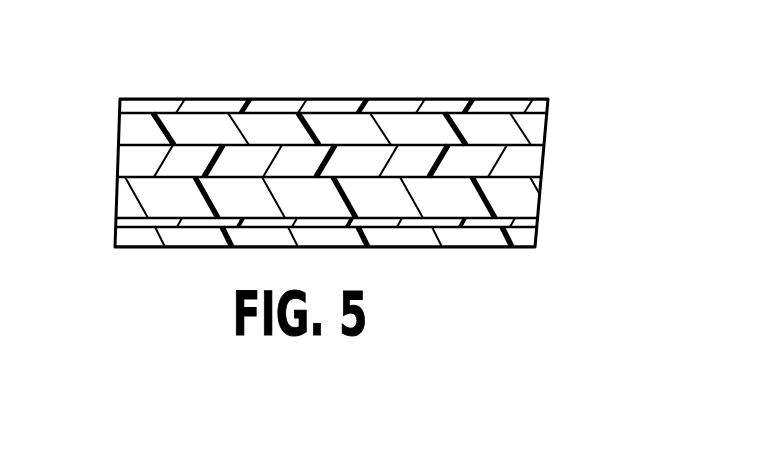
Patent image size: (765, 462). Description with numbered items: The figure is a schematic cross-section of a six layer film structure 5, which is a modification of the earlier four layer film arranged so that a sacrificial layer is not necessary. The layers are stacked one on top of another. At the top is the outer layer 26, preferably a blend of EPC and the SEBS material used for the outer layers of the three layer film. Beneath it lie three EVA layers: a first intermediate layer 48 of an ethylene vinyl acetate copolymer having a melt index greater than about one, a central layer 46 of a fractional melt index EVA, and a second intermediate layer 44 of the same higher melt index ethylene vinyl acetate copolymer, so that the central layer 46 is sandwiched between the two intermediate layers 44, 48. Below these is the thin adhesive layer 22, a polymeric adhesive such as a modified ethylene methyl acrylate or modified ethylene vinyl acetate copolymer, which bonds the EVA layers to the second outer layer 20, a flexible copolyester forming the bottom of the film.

The six layer film structure 5 is at (552, 75).
The second outer layer 20 is at (536, 236).
The adhesive layer 22 is at (120, 221).
The outer layer 26 is at (120, 104).
The intermediate layer 44 is at (541, 193).
The central layer 46 is at (120, 158).
The intermediate layer 48 is at (545, 128).